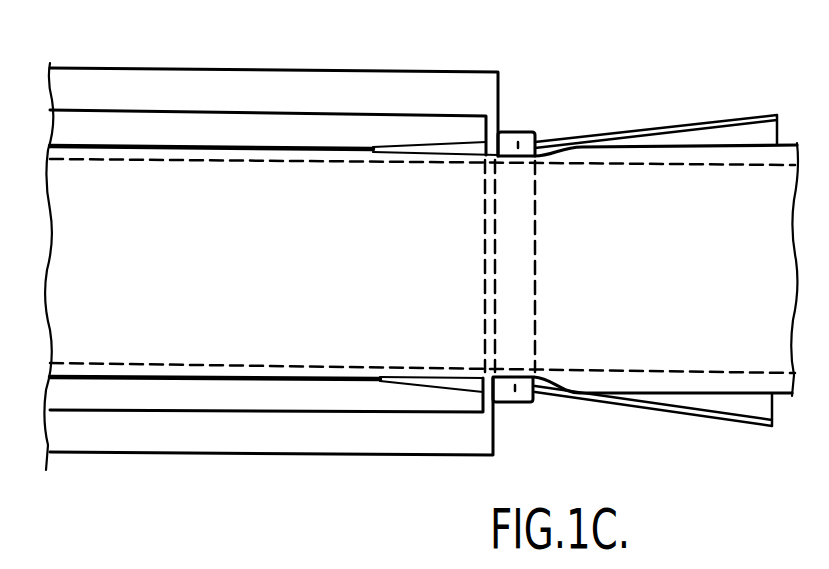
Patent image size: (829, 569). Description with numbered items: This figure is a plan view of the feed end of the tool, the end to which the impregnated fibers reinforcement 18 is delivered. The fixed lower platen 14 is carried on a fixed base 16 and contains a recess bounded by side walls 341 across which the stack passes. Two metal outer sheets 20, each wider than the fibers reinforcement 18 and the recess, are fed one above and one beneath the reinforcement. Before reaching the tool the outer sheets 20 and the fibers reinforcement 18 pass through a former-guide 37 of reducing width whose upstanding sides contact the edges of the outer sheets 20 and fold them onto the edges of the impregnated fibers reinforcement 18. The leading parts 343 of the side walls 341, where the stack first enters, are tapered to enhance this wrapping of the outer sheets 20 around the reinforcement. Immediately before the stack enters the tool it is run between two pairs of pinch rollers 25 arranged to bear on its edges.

The lower platen 14 is at (235, 127).
The fixed base 16 is at (332, 97).
The impregnated fibers reinforcement 18 is at (362, 333).
The metal outer sheets 20 is at (291, 275).
The pinch rollers 25 is at (512, 131).
The former-guide 37 is at (728, 130).
The side walls 341 is at (82, 149).
The leading parts 343 is at (450, 140).